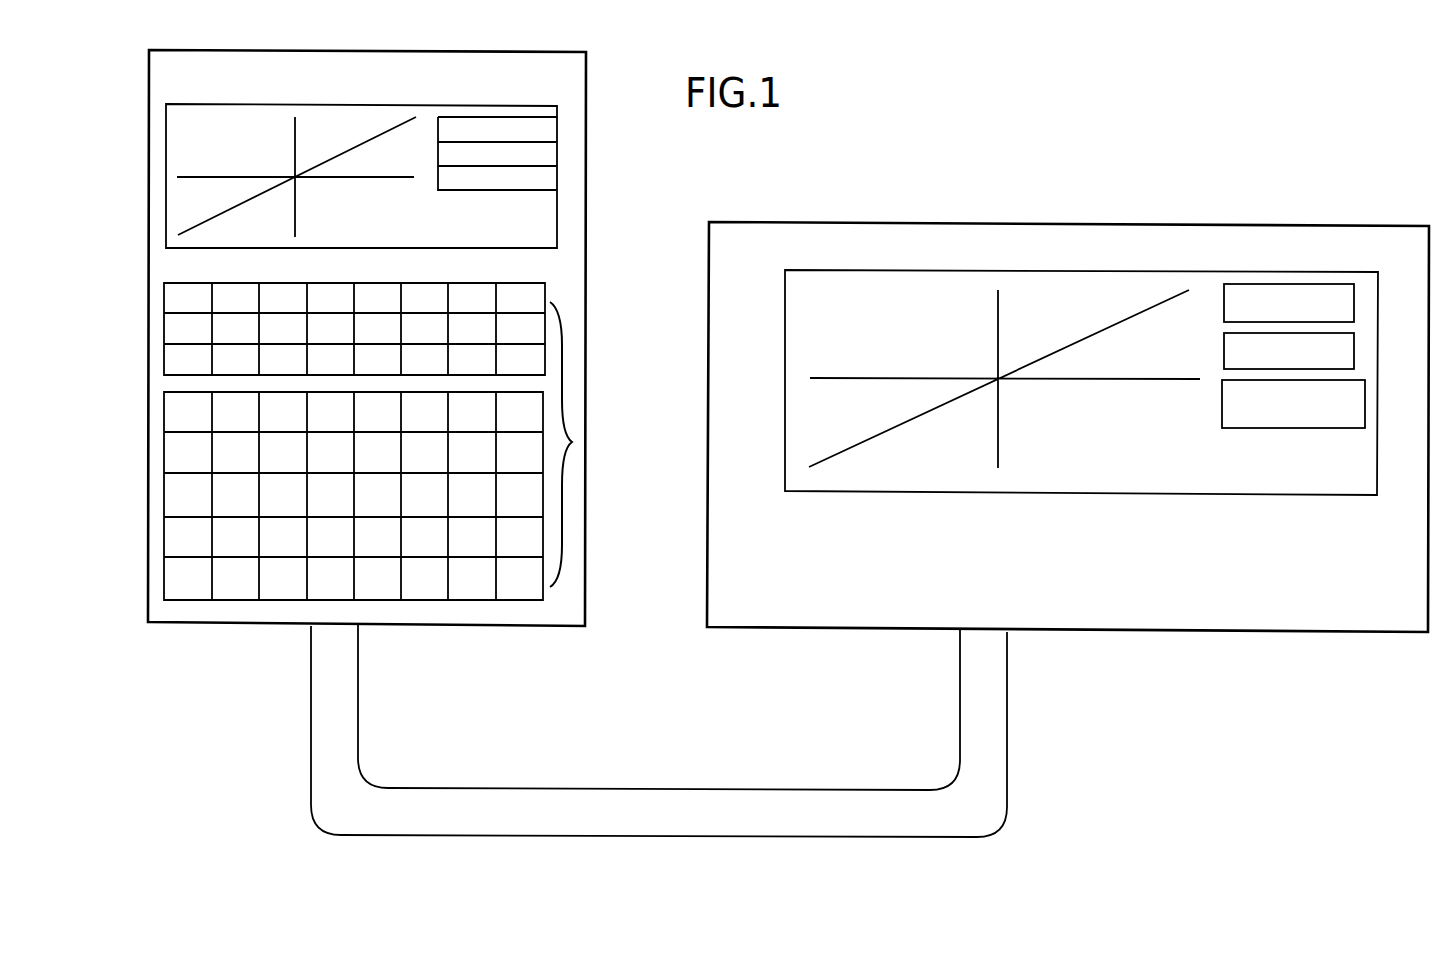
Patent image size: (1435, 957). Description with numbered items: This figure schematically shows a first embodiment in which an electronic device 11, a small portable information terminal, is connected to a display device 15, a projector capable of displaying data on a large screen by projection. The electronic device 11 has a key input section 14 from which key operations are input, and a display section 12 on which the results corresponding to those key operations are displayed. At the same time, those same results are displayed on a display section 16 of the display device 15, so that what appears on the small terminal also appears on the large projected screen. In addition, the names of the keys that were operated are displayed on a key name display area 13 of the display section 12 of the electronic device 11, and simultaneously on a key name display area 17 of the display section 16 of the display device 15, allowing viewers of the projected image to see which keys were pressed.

The electronic device 11 is at (273, 50).
The display section 12 is at (339, 110).
The key name display area 13 is at (548, 160).
The key input section 14 is at (572, 442).
The display device 15 is at (874, 222).
The display section 16 is at (1065, 277).
The key name display area 17 is at (1358, 350).